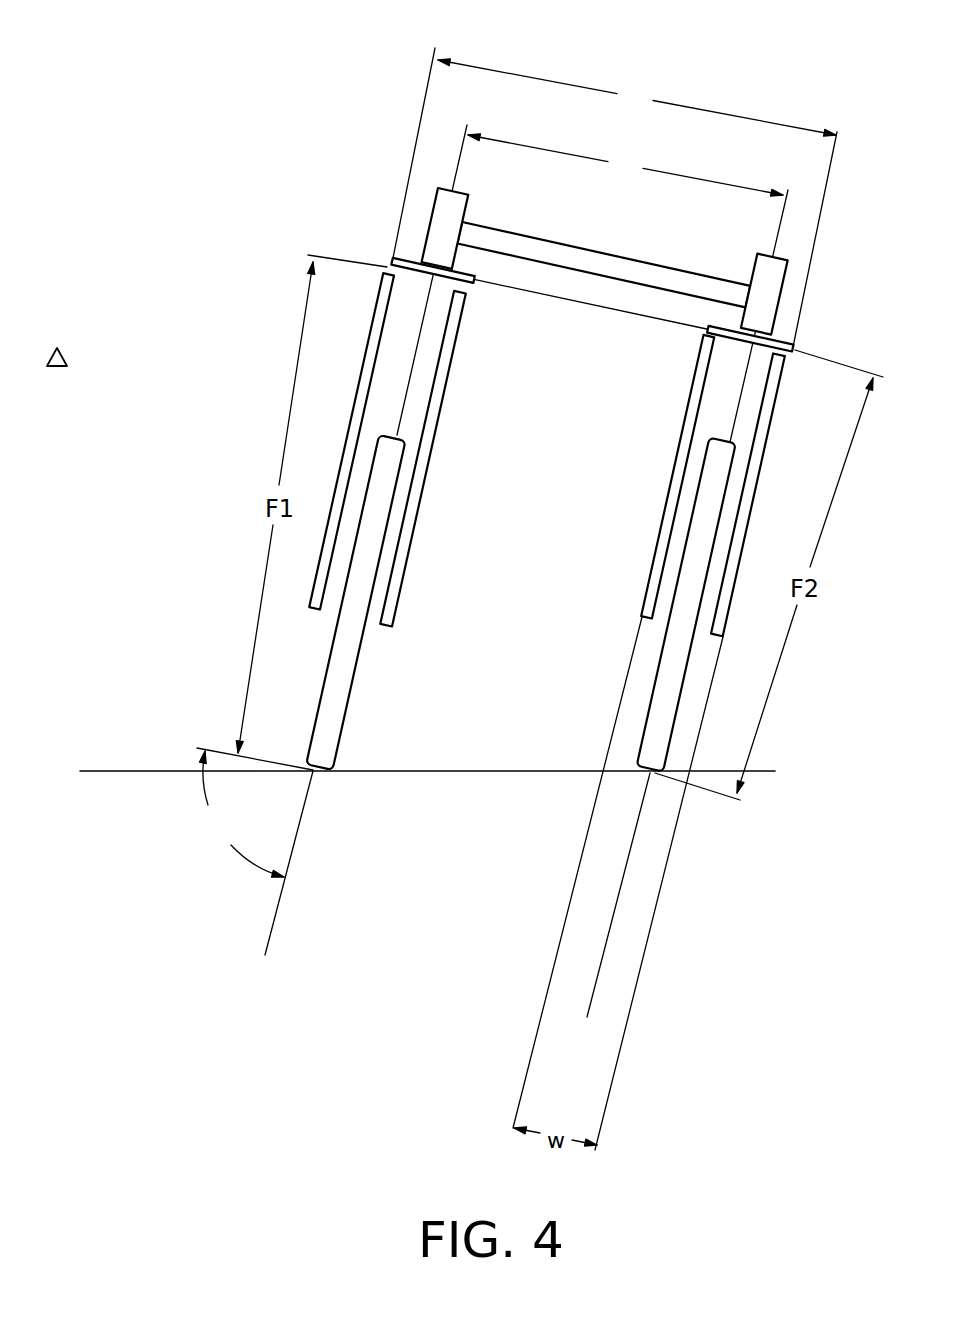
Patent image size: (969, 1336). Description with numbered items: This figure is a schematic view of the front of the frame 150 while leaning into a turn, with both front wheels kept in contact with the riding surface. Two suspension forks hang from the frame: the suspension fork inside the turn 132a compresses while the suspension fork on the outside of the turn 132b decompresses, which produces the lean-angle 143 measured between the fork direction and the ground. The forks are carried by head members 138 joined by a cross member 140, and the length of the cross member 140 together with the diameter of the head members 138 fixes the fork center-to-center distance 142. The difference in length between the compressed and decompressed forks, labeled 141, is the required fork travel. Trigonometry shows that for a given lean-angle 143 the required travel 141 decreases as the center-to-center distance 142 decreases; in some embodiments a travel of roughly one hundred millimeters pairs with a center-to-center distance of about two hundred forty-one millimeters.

The suspension fork inside the turn 132a is at (758, 497).
The suspension fork on the outside of the turn 132b is at (362, 355).
The head member 138 is at (430, 223).
The cross member 140 is at (505, 225).
The difference in length of the compressed and decompressed suspension forks 141 is at (57, 367).
The fork center-to-center distance 142 is at (543, 147).
The lean-angle 143 is at (213, 842).
The frame 150 is at (676, 250).